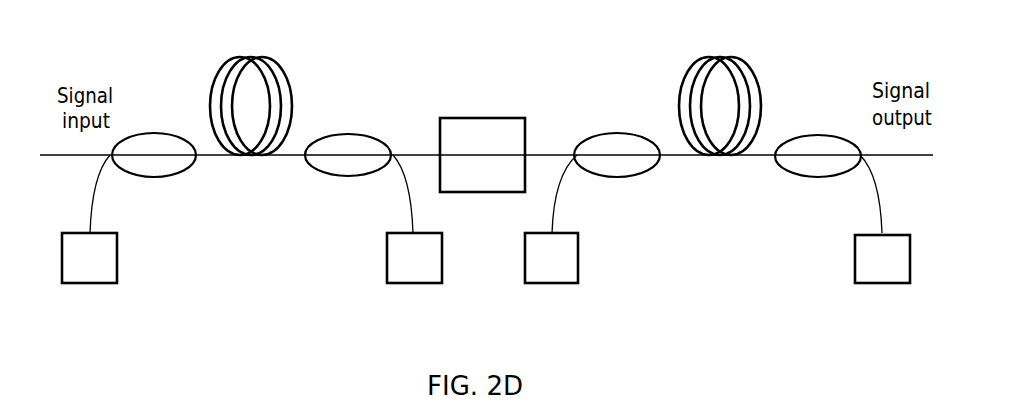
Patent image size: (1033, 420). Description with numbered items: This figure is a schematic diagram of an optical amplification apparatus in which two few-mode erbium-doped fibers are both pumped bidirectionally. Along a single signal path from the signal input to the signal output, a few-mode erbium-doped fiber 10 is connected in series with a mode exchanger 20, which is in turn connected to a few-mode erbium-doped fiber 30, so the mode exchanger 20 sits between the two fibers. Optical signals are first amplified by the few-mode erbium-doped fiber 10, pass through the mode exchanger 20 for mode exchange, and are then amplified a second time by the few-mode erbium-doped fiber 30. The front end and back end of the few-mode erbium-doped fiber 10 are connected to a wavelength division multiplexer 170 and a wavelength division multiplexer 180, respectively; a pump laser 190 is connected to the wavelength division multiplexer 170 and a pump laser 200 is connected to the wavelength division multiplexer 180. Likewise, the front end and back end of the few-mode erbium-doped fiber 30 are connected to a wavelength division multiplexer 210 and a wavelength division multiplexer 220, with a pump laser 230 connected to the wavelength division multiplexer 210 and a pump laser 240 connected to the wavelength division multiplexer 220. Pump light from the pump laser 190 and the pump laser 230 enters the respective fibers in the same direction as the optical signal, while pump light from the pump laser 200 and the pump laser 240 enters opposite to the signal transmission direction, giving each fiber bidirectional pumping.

The few-mode erbium-doped fiber 10 is at (251, 87).
The mode exchanger 20 is at (482, 155).
The few-mode erbium-doped fiber 30 is at (720, 83).
The wavelength division multiplexer 170 is at (154, 171).
The wavelength division multiplexer 180 is at (348, 172).
The pump laser 190 is at (89, 241).
The pump laser 200 is at (414, 241).
The wavelength division multiplexer 210 is at (617, 171).
The wavelength division multiplexer 220 is at (818, 172).
The pump laser 230 is at (551, 239).
The pump laser 240 is at (882, 241).